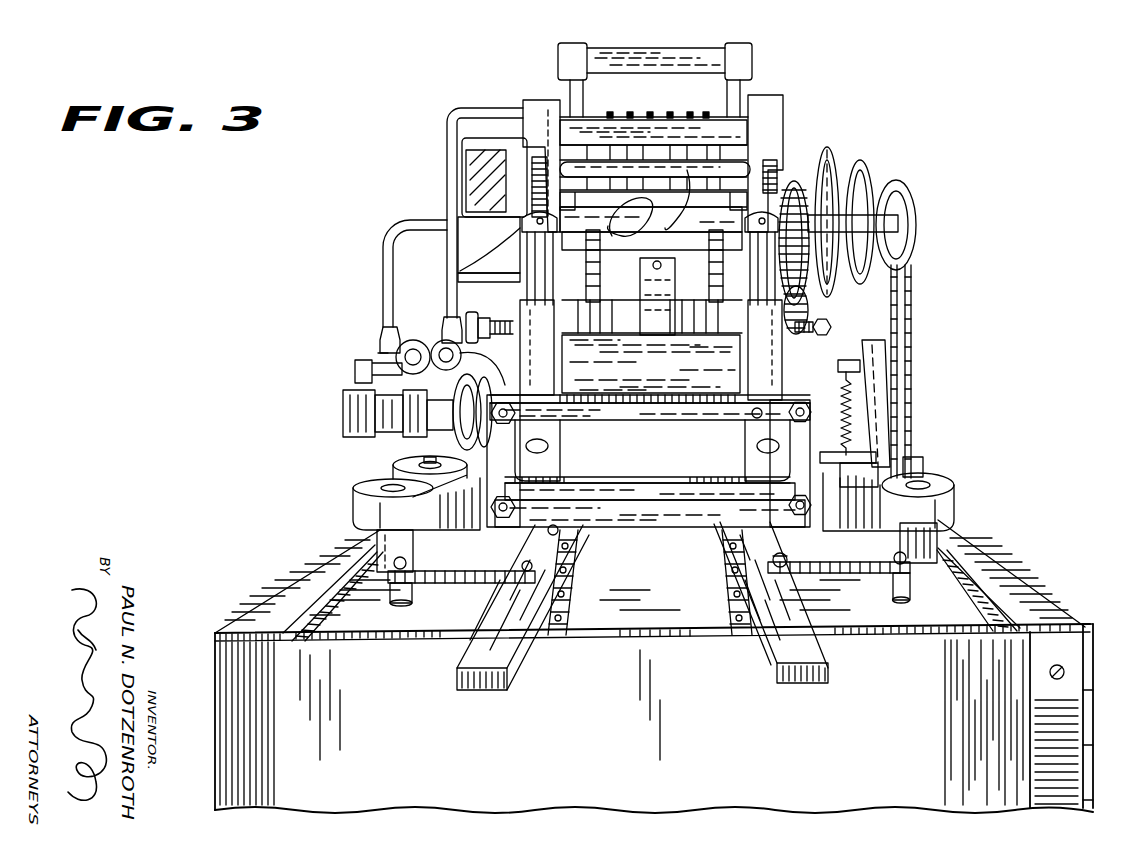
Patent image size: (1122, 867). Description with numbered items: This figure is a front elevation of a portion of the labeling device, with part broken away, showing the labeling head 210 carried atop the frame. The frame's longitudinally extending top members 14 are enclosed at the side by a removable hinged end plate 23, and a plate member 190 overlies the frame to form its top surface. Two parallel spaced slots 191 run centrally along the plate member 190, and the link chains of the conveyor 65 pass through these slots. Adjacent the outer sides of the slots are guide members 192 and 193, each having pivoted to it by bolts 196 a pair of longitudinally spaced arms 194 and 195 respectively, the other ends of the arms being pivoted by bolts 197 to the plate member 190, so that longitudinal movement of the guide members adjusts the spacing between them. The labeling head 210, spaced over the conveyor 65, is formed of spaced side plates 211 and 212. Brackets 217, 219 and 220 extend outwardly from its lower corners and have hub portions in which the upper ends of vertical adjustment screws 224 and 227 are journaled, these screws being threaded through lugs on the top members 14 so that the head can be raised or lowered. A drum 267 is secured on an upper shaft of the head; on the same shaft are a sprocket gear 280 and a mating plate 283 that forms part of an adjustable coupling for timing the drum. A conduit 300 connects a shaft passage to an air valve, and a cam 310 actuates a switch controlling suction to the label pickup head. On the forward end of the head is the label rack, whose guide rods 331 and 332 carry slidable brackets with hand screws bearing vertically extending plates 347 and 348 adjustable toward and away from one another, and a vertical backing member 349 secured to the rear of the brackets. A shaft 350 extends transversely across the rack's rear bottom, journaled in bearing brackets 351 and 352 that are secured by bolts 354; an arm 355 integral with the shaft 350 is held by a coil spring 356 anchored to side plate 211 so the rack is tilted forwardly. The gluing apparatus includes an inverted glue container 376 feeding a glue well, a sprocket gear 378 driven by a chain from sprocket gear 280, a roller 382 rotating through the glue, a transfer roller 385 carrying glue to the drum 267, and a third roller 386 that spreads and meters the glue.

The top members 14 is at (305, 598).
The end plate 23 is at (412, 741).
The sprocket chains 65 is at (730, 587).
The plate member 190 is at (482, 616).
The slots 191 is at (720, 550).
The guide member 192 is at (797, 650).
The guide member 193 is at (458, 660).
The arms 194 is at (840, 562).
The arms 195 is at (443, 571).
The bolts 196 is at (553, 528).
The bolts 197 is at (390, 583).
The labeling head 210 is at (884, 170).
The side plate 211 is at (760, 145).
The side plate 212 is at (556, 105).
The bracket 217 is at (963, 501).
The bracket 219 is at (392, 476).
The bracket 220 is at (355, 511).
The vertical adjustment screw 224 is at (937, 530).
The vertical adjustment screw 227 is at (377, 545).
The drum 267 is at (713, 153).
The sprocket gear 280 is at (832, 158).
The mating plate 283 is at (872, 163).
The conduit 300 is at (382, 299).
The cam 310 is at (437, 340).
The guide rod 331 is at (535, 285).
The guide rod 332 is at (770, 290).
The plate 347 is at (592, 268).
The plate 348 is at (716, 268).
The vertical backing member 349 is at (690, 381).
The shaft 350 is at (908, 464).
The bearing bracket 351 is at (558, 453).
The bearing bracket 352 is at (753, 459).
The bolts 354 is at (752, 413).
The arm 355 is at (873, 424).
The coil spring 356 is at (860, 444).
The inverted container 376 is at (462, 155).
The sprocket gear 378 is at (852, 257).
The roller 382 is at (655, 207).
The transfer roller 385 is at (650, 227).
The third roller 386 is at (700, 205).